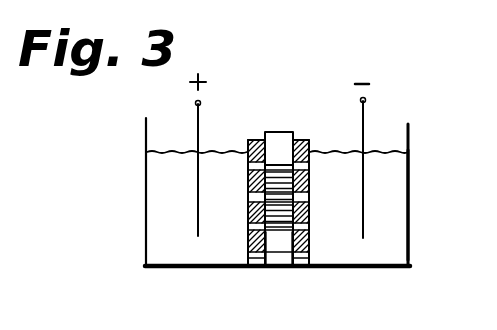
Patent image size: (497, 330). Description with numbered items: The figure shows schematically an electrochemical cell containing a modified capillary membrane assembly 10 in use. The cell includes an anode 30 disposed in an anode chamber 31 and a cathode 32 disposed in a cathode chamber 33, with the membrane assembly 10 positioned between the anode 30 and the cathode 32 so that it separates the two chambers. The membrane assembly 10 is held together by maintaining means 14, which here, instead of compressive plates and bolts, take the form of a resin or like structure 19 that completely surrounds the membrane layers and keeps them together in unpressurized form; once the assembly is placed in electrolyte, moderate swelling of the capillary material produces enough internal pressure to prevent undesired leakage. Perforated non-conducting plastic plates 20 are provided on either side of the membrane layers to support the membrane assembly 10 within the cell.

The membrane assembly 10 is at (269, 174).
The maintaining means 14 is at (286, 125).
The resin structure 19 is at (283, 257).
The perforated non-conducting plates 20 is at (248, 147).
The anode 30 is at (197, 224).
The anode chamber 31 is at (145, 201).
The cathode 32 is at (364, 200).
The cathode chamber 33 is at (394, 241).